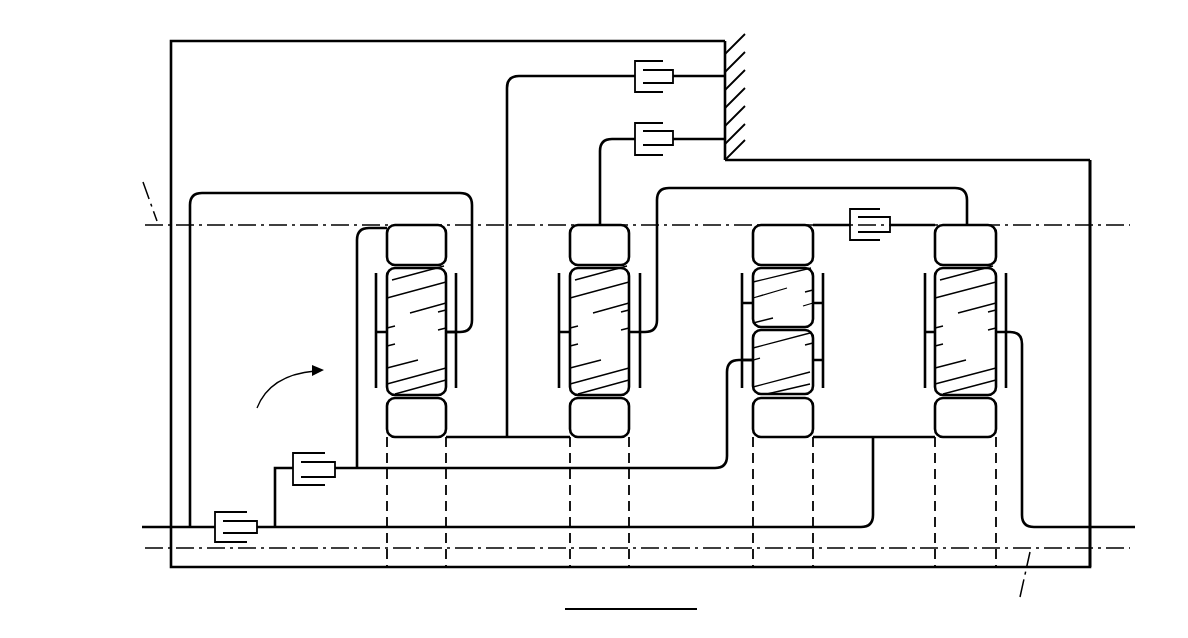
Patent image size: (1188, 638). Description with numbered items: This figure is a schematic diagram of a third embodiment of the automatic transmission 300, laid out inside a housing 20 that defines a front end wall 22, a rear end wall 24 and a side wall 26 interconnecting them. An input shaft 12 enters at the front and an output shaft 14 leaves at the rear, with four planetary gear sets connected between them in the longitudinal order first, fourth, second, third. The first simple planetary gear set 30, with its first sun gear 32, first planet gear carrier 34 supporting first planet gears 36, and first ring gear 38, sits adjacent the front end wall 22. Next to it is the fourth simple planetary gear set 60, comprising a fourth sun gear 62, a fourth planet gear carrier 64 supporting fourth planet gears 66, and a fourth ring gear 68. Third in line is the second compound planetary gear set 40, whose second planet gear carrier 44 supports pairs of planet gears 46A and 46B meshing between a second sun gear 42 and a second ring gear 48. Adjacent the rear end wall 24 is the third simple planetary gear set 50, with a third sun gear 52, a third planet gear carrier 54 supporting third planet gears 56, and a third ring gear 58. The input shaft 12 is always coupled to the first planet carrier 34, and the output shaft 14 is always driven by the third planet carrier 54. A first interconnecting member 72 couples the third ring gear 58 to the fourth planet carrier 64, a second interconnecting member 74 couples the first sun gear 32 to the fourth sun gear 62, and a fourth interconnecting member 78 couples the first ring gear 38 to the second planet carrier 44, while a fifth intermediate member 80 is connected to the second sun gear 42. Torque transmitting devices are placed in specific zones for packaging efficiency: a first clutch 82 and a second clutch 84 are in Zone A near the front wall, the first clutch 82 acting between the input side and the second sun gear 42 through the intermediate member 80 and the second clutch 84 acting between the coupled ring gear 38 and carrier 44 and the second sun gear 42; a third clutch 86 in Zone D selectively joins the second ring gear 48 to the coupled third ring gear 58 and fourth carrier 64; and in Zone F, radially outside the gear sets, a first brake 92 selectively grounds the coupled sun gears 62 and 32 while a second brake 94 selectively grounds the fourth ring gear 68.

The automatic transmission 300 is at (1100, 118).
The housing 20 is at (771, 84).
The third side wall 26 is at (906, 160).
The second or rear end wall 24 is at (1092, 420).
The first or front end wall 22 is at (171, 388).
The input shaft 12 is at (155, 530).
The output shaft 14 is at (1108, 530).
The first simple planetary gear set 30 is at (371, 335).
The first sun gear 32 is at (403, 429).
The first planet gear carrier 34 is at (458, 372).
The first plurality of pinion or planet gears 36 is at (403, 342).
The first ring gear 38 is at (403, 257).
The second compound planetary gear set 40 is at (846, 339).
The second sun gear 42 is at (770, 429).
The second planet gear carrier 44 is at (740, 283).
The second plurality of pairs of pinion or planet gears 46A is at (764, 315).
The second plurality of pairs of pinion or planet gears 46B is at (764, 369).
The second ring gear 48 is at (770, 257).
The third simple planetary gear set 50 is at (1056, 307).
The third sun gear 52 is at (952, 429).
The third planet gear carrier 54 is at (1010, 284).
The third plurality of pinion or planet gears 56 is at (952, 342).
The third ring gear 58 is at (952, 257).
The fourth simple planetary gear set 60 is at (658, 366).
The fourth sun gear 62 is at (586, 429).
The fourth planet gear carrier 64 is at (645, 310).
The fourth plurality of pinion or planet gears 66 is at (586, 342).
The fourth ring gear 68 is at (586, 257).
The first shaft, quill or interconnecting member 72 is at (780, 186).
The second shaft, quill or interconnecting member 74 is at (482, 440).
The fourth shaft, quill or interconnecting member 78 is at (668, 472).
The fifth shaft, quill or intermediate member 80 is at (512, 530).
The first clutch 82 is at (237, 544).
The second clutch 84 is at (307, 452).
The third clutch 86 is at (860, 208).
The first brake 92 is at (640, 61).
The second brake 94 is at (640, 123).